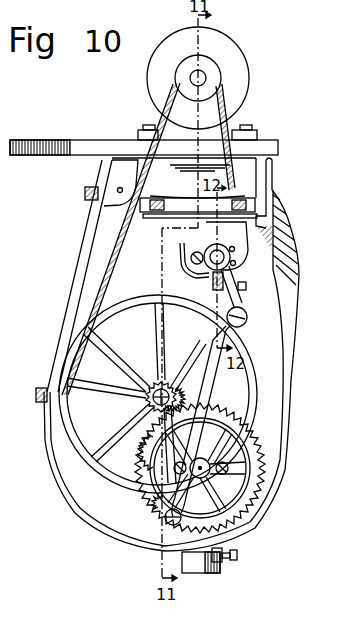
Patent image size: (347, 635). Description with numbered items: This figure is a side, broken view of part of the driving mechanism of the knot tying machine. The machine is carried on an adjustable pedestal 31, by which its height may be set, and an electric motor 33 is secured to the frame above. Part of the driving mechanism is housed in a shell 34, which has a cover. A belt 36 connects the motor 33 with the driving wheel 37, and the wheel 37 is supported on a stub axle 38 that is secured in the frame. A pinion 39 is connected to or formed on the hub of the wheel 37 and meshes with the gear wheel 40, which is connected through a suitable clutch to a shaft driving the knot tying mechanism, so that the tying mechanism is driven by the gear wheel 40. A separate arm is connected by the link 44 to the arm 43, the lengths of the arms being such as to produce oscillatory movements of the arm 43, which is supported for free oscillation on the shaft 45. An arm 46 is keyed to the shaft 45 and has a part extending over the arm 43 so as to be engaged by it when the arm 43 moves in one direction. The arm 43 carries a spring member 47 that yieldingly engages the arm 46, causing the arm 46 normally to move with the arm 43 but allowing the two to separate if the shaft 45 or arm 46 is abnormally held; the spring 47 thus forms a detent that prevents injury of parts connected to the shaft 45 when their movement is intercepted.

The adjustable pedestal 31 is at (200, 565).
The electric motor 33 is at (232, 82).
The shell 34 is at (267, 414).
The belt 36 is at (105, 262).
The driving wheel 37 is at (116, 476).
The stub axle 38 is at (151, 396).
The pinion 39 is at (183, 396).
The gear wheel 40 is at (258, 478).
The arm 43 is at (243, 300).
The link 44 is at (210, 373).
The shaft 45 is at (223, 250).
The arm 46 is at (217, 291).
The spring member 47 is at (180, 266).